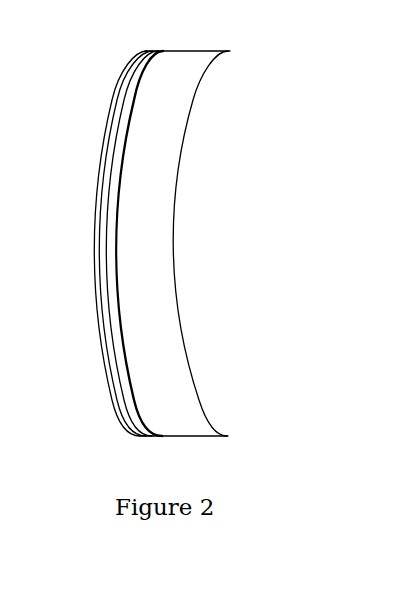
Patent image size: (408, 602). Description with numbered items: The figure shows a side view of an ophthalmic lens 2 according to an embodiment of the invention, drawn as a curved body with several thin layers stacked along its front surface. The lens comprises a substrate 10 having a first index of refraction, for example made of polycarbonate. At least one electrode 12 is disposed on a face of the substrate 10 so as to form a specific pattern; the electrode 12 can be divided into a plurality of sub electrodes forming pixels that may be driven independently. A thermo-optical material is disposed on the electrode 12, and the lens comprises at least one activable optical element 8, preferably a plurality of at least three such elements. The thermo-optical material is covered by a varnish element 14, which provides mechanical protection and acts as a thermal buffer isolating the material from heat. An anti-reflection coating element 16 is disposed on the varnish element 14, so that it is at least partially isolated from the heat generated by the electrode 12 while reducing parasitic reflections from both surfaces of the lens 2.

The ophthalmic lens 2 is at (174, 226).
The activable optical element 8 is at (113, 210).
The substrate 10 is at (172, 73).
The electrode 12 is at (130, 115).
The varnish element 14 is at (113, 349).
The anti-reflection coating element 16 is at (127, 396).